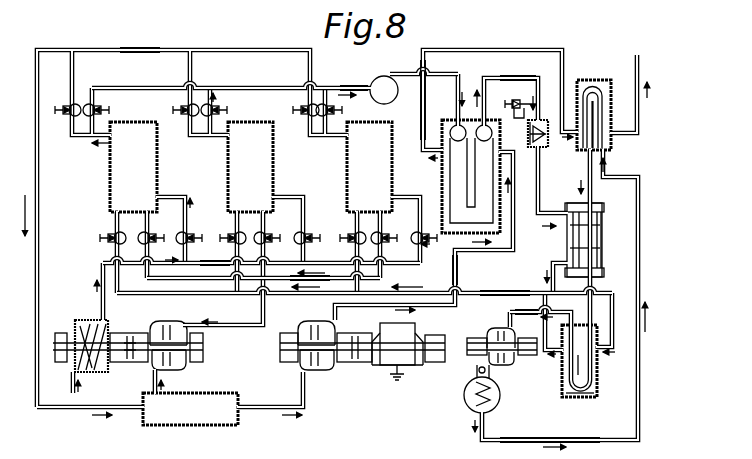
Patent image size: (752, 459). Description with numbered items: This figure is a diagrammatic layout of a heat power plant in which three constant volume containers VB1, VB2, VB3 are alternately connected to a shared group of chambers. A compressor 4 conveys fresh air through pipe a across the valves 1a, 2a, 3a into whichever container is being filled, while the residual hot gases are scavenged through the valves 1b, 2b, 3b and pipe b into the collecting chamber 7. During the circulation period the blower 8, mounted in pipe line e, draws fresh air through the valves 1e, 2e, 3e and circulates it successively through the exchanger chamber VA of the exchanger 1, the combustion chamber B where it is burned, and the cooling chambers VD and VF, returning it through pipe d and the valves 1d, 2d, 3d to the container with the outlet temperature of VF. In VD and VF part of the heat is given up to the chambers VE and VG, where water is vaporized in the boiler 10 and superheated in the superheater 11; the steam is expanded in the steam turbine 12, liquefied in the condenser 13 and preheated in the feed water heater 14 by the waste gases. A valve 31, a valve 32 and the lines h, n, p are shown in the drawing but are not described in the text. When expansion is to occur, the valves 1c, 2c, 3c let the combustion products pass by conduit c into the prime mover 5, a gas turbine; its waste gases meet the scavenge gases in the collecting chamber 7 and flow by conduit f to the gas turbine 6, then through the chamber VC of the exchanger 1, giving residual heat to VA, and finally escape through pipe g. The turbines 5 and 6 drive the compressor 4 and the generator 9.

The exchanger 1 is at (436, 170).
The compressor 4 is at (85, 320).
The prime mover 5 is at (187, 371).
The gas turbine 6 is at (328, 374).
The collecting chamber 7 is at (182, 414).
The blower 8 is at (371, 80).
The generator 9 is at (408, 366).
The boiler 10 is at (567, 242).
The superheater 11 is at (576, 400).
The steam turbine 12 is at (488, 330).
The condenser 13 is at (494, 401).
The feed water heater 14 is at (596, 80).
The valve B 31 is at (551, 140).
The valve 32 is at (514, 101).
The valve 1a is at (179, 229).
The valve 1b is at (64, 118).
The valve 1c is at (145, 231).
The valve 1d is at (103, 241).
The valve 1e is at (107, 112).
The valve 2a is at (310, 230).
The valve 2b is at (181, 118).
The valve 2c is at (261, 231).
The valve 2d is at (224, 244).
The valve 2e is at (224, 112).
The valve 3a is at (427, 249).
The valve 3b is at (294, 112).
The valve 3c is at (378, 231).
The valve 3d is at (345, 244).
The valve 3e is at (339, 112).
The exchanger chamber VA is at (451, 186).
The container VB1 is at (133, 167).
The container VB2 is at (250, 167).
The container VB3 is at (369, 167).
The exchanger chamber VC is at (452, 207).
The cooling chamber VD is at (592, 225).
The chamber VE is at (592, 248).
The cooling chamber VF is at (594, 389).
The chamber VG is at (589, 367).
The combustion chamber B is at (540, 119).
The pipe a is at (159, 283).
The pipe b is at (114, 231).
The conduit c is at (234, 329).
The pipe d is at (516, 183).
The pipe e is at (350, 80).
The conduit f is at (365, 330).
The pipe g is at (532, 100).
The conduit h is at (512, 92).
The conduit n is at (519, 318).
The conduit p is at (550, 448).